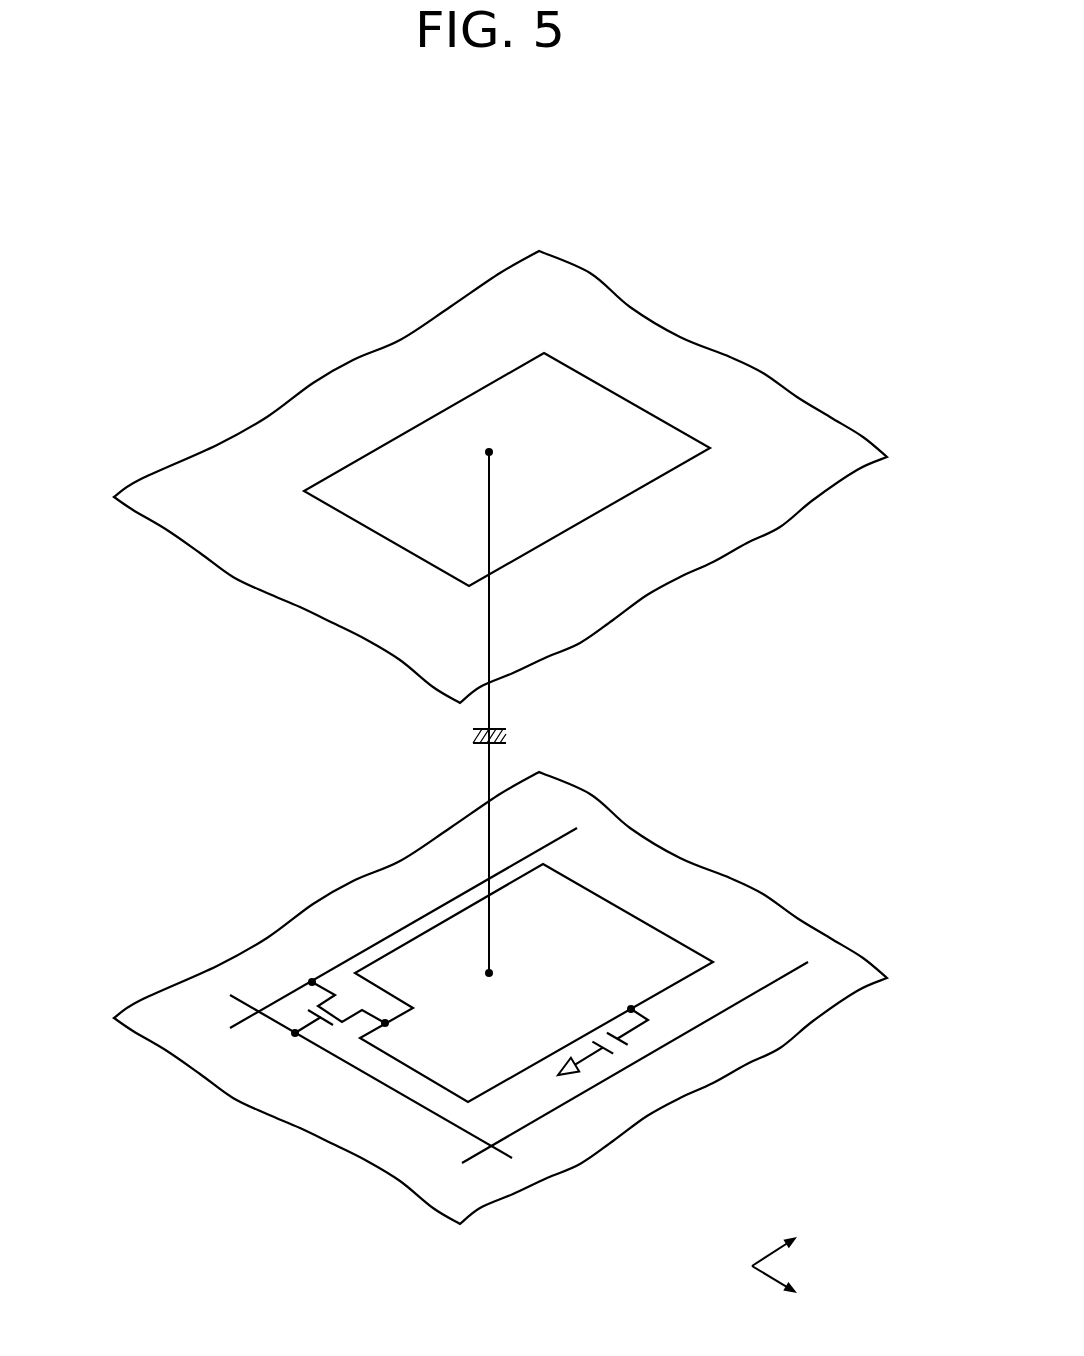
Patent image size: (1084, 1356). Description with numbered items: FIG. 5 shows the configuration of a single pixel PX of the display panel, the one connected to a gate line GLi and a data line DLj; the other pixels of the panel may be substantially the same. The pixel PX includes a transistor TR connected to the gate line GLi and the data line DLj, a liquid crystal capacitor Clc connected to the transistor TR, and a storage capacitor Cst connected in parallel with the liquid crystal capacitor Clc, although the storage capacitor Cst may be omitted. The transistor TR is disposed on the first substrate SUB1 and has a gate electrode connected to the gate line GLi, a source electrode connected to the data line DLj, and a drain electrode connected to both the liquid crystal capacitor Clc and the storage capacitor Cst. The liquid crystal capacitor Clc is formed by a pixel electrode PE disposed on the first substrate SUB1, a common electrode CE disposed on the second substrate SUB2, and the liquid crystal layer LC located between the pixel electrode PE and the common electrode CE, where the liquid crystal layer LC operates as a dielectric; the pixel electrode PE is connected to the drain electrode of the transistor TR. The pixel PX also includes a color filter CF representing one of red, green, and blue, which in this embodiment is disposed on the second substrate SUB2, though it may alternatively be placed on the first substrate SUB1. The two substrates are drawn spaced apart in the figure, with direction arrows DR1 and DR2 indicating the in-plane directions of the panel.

The pixel PX is at (748, 296).
The common electrode CE is at (767, 518).
The color filter CF is at (597, 513).
The second substrate SUB2 is at (583, 643).
The liquid crystal capacitor Clc is at (512, 712).
The liquid crystal layer LC is at (672, 728).
The pixel electrode PE is at (611, 902).
The gate line GLi is at (349, 1069).
The data line DLj is at (381, 937).
The transistor TR is at (329, 1040).
The storage capacitor Cst is at (640, 1043).
The first substrate SUB1 is at (662, 1107).
The first direction DR1 is at (795, 1286).
The second direction DR2 is at (795, 1244).